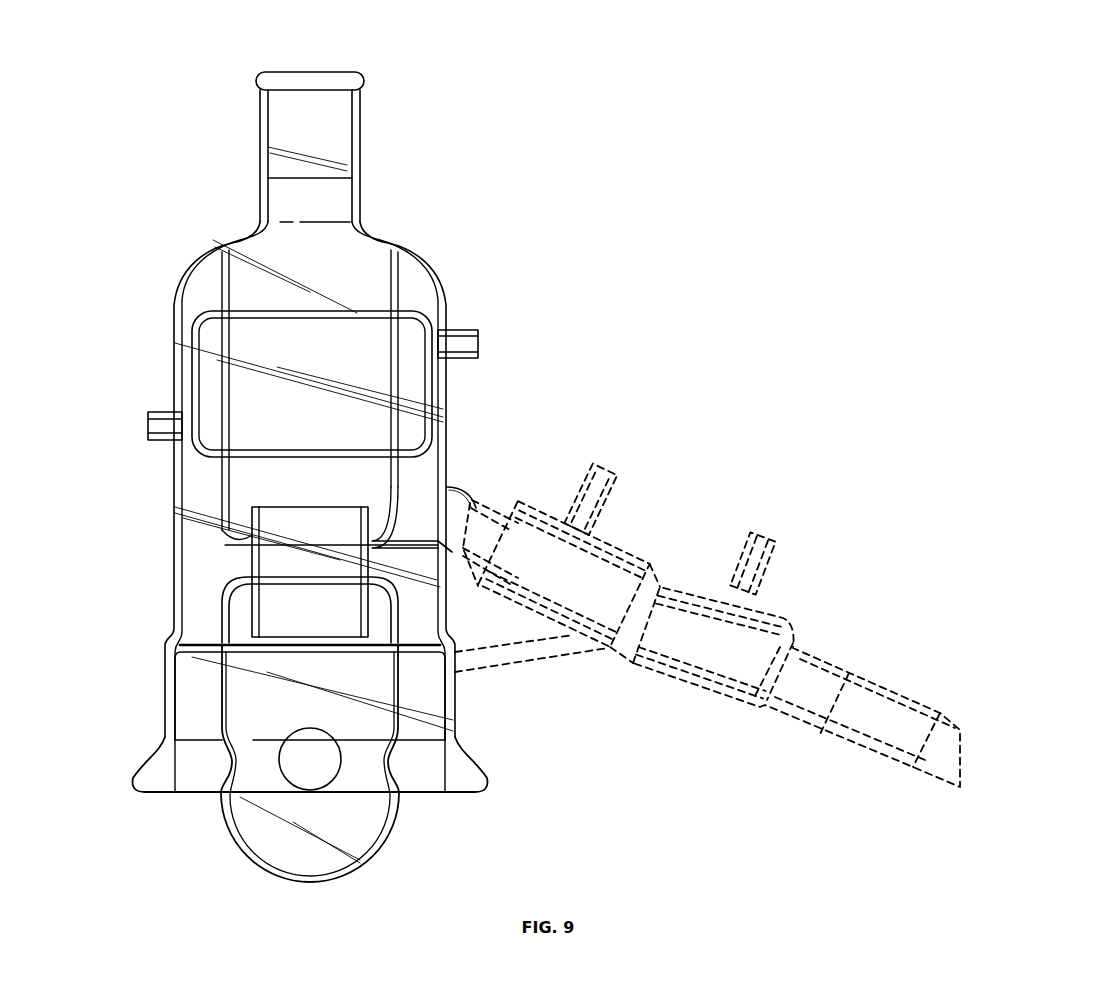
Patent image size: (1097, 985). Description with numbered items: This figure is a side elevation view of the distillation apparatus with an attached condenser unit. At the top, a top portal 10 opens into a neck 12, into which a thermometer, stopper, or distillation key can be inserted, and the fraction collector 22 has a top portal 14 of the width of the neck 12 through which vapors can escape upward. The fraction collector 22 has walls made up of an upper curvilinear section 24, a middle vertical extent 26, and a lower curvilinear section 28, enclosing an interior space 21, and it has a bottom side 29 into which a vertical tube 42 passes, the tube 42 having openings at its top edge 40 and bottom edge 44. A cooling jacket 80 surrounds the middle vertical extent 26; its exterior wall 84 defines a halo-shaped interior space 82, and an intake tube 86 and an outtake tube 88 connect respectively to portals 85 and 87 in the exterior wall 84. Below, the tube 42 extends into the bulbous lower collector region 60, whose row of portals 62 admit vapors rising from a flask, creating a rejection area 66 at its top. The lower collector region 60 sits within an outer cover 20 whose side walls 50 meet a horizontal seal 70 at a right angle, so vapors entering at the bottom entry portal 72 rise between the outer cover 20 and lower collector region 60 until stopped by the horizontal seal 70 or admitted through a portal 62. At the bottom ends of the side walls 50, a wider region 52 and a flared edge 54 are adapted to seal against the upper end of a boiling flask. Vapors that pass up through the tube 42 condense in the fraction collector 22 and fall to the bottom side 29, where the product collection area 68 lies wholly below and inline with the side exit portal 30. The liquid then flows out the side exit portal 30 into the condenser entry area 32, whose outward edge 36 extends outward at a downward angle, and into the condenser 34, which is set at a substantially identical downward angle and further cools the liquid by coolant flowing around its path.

The top portal 10 is at (330, 74).
The neck 12 is at (357, 120).
The top portal 14 is at (340, 178).
The outer cover 20 is at (395, 250).
The interior space 21 is at (250, 345).
The fraction collector 22 is at (260, 273).
The upper curvilinear section 24 is at (395, 290).
The middle vertical extent 26 is at (393, 404).
The lower curvilinear section 28 is at (238, 531).
The bottom side 29 is at (272, 556).
The side exit portal 30 is at (456, 512).
The condenser entry area 32 is at (474, 506).
The condenser 34 is at (608, 549).
The outward edge 36 is at (448, 549).
The top edge 40 is at (275, 507).
The tube 42 is at (264, 561).
The bottom edge 44 is at (263, 638).
The side walls 50 is at (176, 371).
The wider region 52 is at (166, 685).
The flared edge 54 is at (143, 773).
The lower collector region 60 is at (378, 828).
The portals 62 is at (297, 778).
The rejection area 66 is at (243, 597).
The product collection area 68 is at (260, 546).
The horizontal seal 70 is at (196, 646).
The bottom entry portal 72 is at (200, 793).
The cooling jacket 80 is at (420, 316).
The interior space 82 is at (415, 375).
The exterior wall 84 is at (428, 393).
The intake portal 85 is at (192, 422).
The intake tube 86 is at (150, 433).
The outtake portal 87 is at (428, 341).
The outtake tube 88 is at (470, 350).